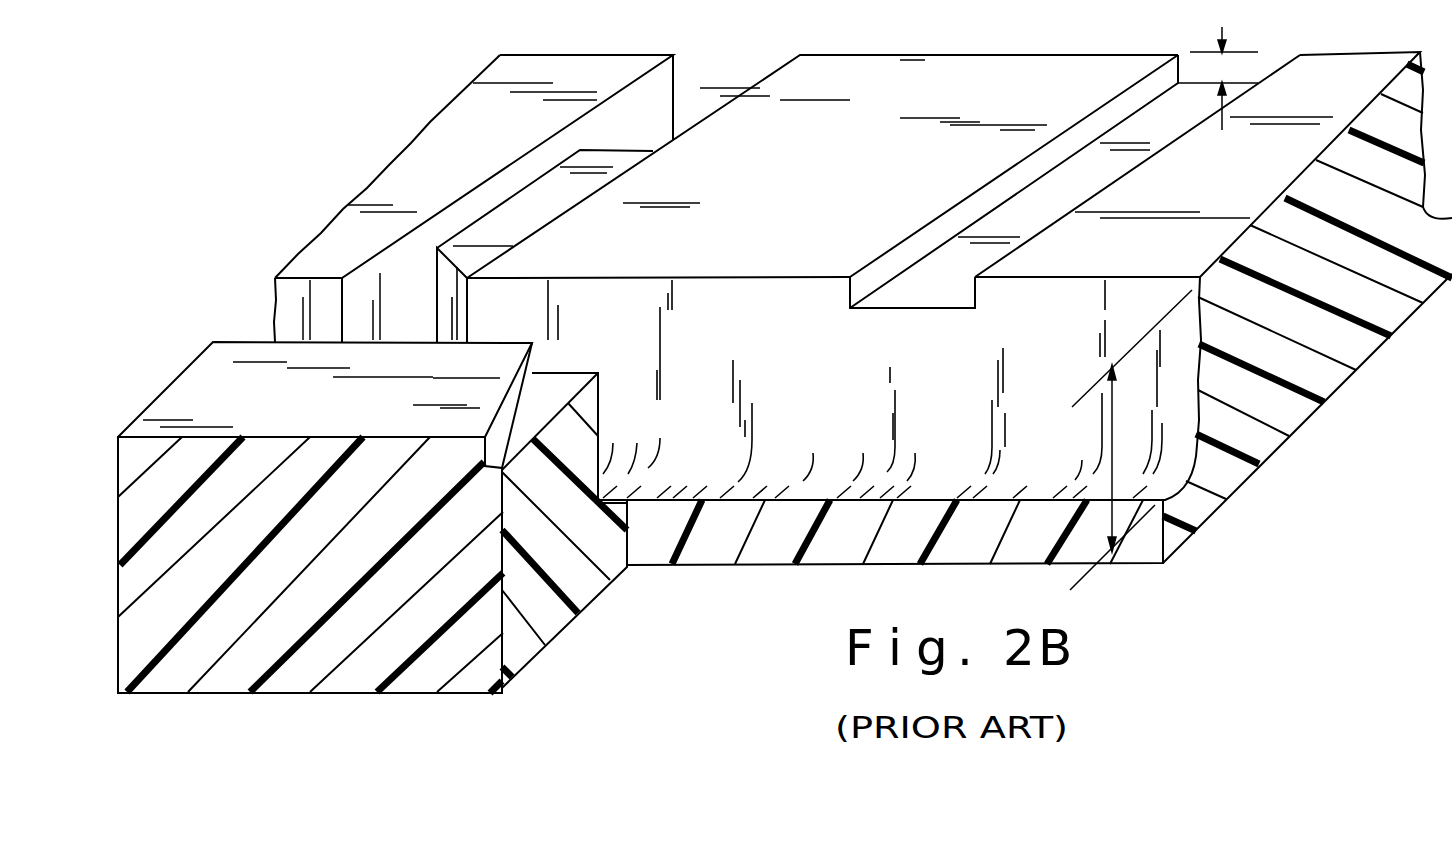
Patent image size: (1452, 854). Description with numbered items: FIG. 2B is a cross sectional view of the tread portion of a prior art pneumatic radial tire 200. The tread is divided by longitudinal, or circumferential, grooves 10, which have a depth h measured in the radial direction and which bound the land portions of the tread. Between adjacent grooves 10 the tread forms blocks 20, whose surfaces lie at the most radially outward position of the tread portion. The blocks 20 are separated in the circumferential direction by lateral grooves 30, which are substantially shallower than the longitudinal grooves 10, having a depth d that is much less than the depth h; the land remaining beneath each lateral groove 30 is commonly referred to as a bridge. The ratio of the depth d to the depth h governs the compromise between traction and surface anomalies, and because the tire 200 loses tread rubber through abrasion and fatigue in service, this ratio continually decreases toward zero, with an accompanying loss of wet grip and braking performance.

The circumferential groove 10 is at (263, 314).
The block 20 is at (830, 182).
The lateral groove 30 is at (550, 220).
The pneumatic radial tire 200 is at (331, 709).